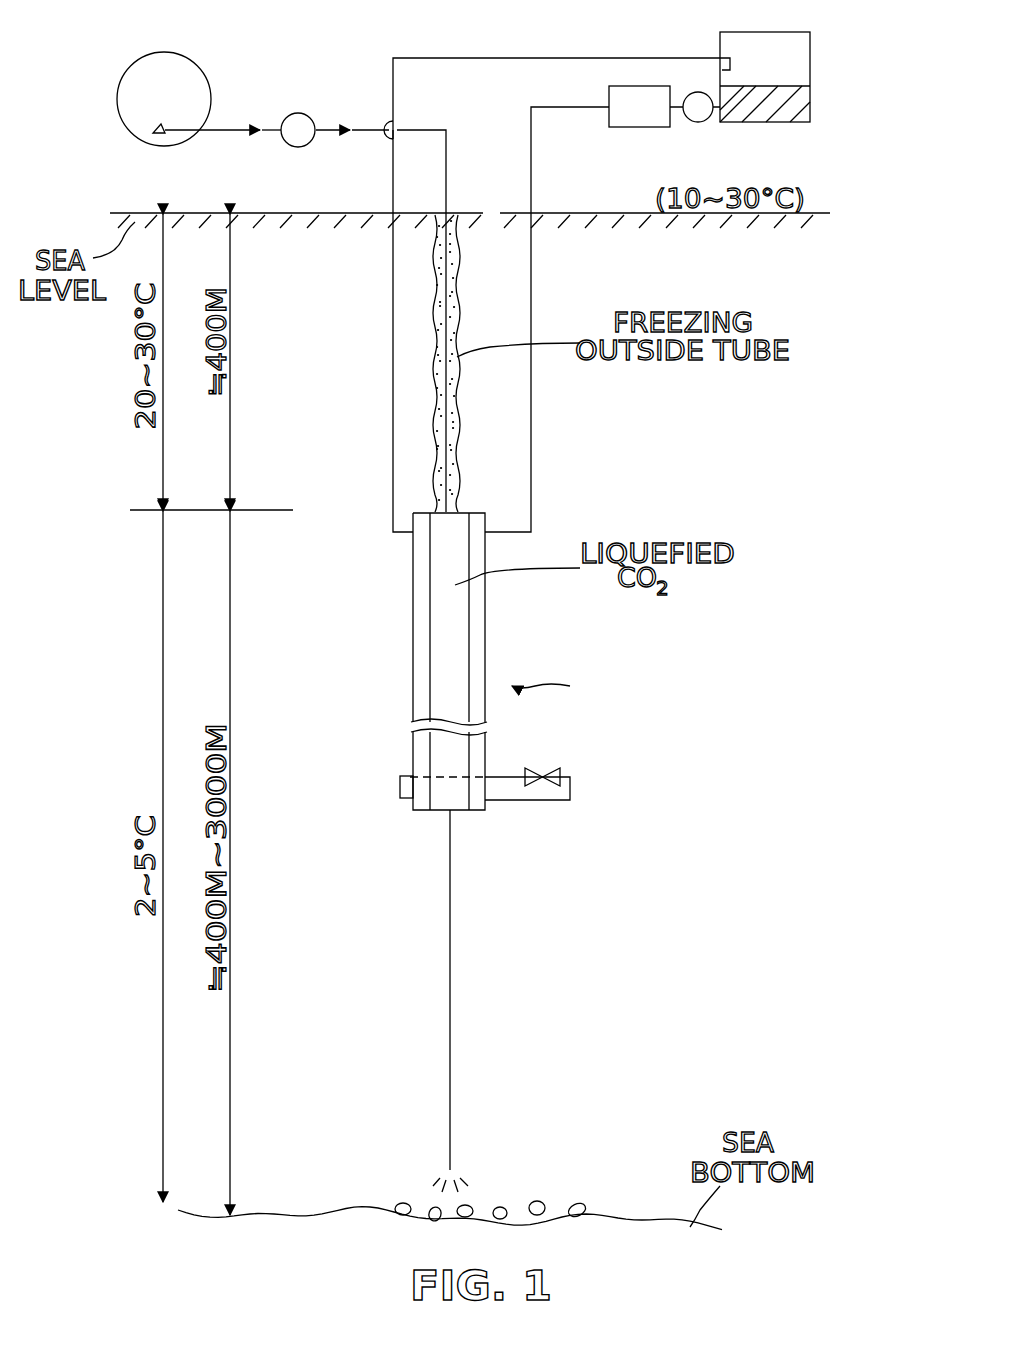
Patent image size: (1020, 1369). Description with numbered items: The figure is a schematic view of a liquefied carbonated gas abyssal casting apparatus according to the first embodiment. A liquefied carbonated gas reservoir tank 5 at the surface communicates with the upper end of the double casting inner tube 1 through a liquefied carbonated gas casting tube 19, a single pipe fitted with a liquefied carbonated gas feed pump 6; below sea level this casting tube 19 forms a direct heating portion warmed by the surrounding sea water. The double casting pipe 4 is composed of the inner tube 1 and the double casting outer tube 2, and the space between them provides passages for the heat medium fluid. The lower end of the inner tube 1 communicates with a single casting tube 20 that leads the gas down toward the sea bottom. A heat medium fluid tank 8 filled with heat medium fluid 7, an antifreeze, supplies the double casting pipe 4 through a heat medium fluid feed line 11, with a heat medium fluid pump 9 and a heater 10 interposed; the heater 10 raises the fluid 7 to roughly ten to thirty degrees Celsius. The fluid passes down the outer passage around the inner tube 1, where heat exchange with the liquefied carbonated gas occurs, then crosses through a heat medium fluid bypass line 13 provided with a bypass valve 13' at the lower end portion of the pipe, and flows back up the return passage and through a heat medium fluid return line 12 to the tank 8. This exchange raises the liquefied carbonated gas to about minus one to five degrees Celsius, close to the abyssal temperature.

The double casting inner tube 1 is at (430, 578).
The double casting outer tube 2 is at (485, 626).
The double casting pipe 4 is at (553, 686).
The liquefied carbonated gas reservoir tank 5 is at (200, 70).
The liquefied carbonated gas feed pump 6 is at (310, 115).
The heat medium fluid 7 is at (797, 115).
The heat medium fluid tank 8 is at (768, 124).
The heat medium fluid pump 9 is at (692, 123).
The heater 10 is at (636, 114).
The heat medium fluid feed line 11 is at (562, 108).
The heat medium fluid return line 12 is at (556, 58).
The heat medium fluid bypass line 13 is at (532, 792).
The bypass valve 13' is at (584, 752).
The liquefied carbonated gas casting tube 19 is at (232, 130).
The single casting tube 20 is at (450, 975).